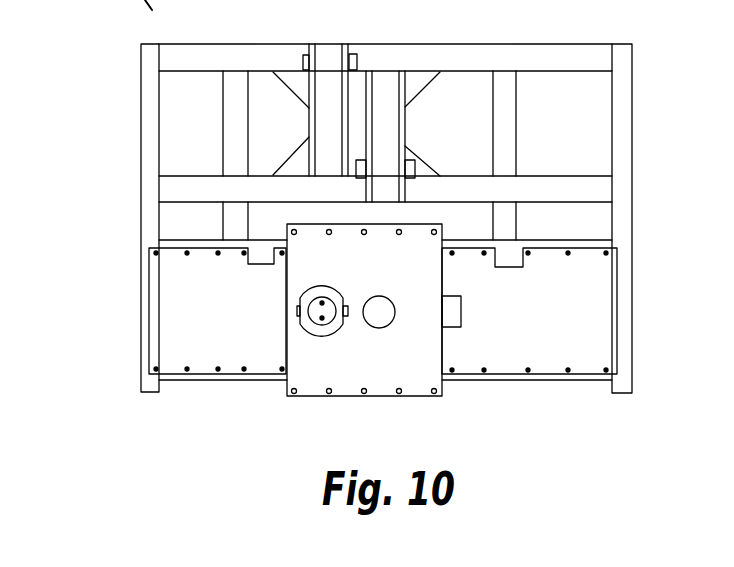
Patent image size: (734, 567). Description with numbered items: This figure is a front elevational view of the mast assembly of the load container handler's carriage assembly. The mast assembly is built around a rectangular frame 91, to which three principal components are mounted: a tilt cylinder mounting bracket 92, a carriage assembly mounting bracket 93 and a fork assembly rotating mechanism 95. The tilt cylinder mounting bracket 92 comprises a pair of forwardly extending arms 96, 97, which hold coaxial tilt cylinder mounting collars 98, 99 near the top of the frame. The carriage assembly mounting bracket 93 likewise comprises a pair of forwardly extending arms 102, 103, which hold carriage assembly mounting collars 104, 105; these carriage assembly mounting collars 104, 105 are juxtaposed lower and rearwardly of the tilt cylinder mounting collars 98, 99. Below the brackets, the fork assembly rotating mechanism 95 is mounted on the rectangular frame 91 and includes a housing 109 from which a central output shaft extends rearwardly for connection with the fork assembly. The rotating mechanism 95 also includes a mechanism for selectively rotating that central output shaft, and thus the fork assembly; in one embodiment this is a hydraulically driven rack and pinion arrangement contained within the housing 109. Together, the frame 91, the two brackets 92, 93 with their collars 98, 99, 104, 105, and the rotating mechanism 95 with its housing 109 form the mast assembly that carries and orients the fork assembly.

The rectangular frame 91 is at (141, 140).
The tilt cylinder mounting bracket 92 is at (348, 92).
The carriage assembly mounting bracket 93 is at (403, 142).
The fork assembly rotating mechanism 95 is at (294, 358).
The forwardly extending arm 96 is at (373, 100).
The forwardly extending arm 97 is at (309, 92).
The tilt cylinder mounting collar 98 is at (357, 60).
The tilt cylinder mounting collar 99 is at (303, 61).
The forwardly extending arm 102 is at (367, 145).
The forwardly extending arm 103 is at (407, 120).
The carriage assembly mounting collar 104 is at (358, 178).
The carriage assembly mounting collar 105 is at (415, 168).
The housing 109 is at (434, 343).